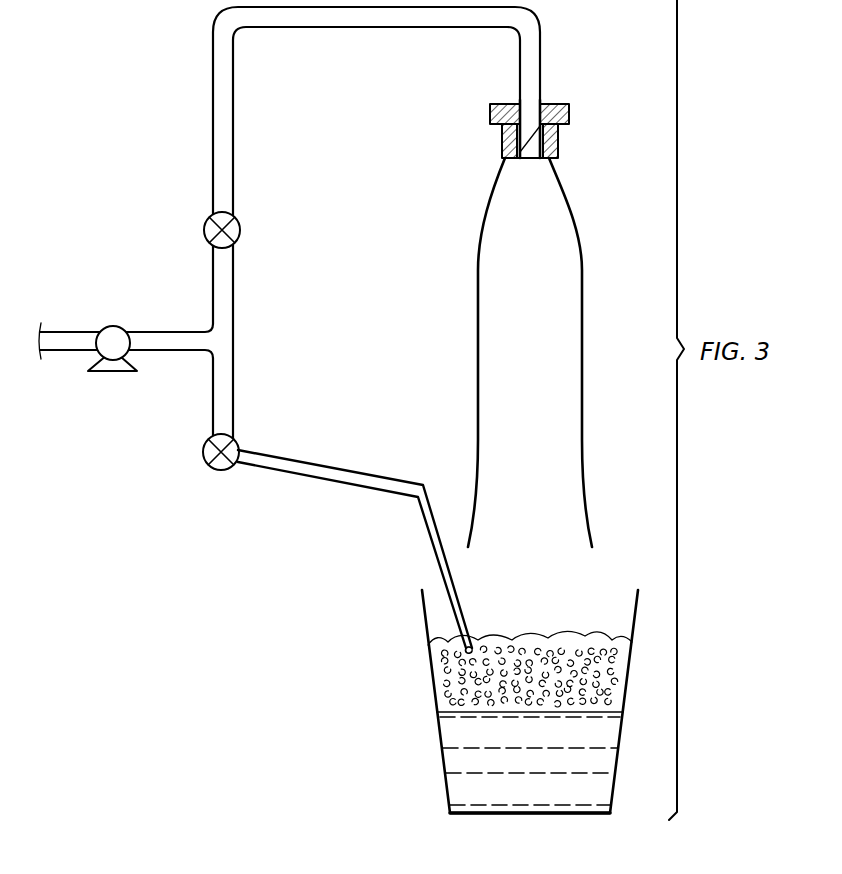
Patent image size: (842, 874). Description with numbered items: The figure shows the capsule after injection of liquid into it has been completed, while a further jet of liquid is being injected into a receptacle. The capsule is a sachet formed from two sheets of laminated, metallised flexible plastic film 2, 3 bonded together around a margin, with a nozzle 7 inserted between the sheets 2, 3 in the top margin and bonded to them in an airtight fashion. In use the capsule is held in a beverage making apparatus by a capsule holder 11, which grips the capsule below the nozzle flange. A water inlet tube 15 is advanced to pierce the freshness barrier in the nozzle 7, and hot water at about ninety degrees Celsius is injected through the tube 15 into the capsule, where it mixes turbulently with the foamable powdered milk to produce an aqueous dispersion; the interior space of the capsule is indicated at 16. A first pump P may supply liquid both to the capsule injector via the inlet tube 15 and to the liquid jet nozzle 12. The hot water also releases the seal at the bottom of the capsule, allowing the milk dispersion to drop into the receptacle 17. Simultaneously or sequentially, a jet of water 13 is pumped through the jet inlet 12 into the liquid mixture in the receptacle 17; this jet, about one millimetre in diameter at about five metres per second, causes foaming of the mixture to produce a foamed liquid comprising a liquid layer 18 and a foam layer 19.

The sheet of laminated, metallised flexible plastic film 2 is at (582, 275).
The sheet of laminated, metallised flexible plastic film 3 is at (478, 268).
The nozzle 7 is at (569, 114).
The capsule holder 11 is at (502, 148).
The liquid jet nozzle 12 is at (423, 527).
The jet of water 13 is at (466, 623).
The water inlet tube 15 is at (541, 75).
The bottle interior 16 is at (498, 378).
The receptacle 17 is at (442, 703).
The liquid layer 18 is at (462, 759).
The foam layer 19 is at (442, 663).
The first pump P is at (108, 363).